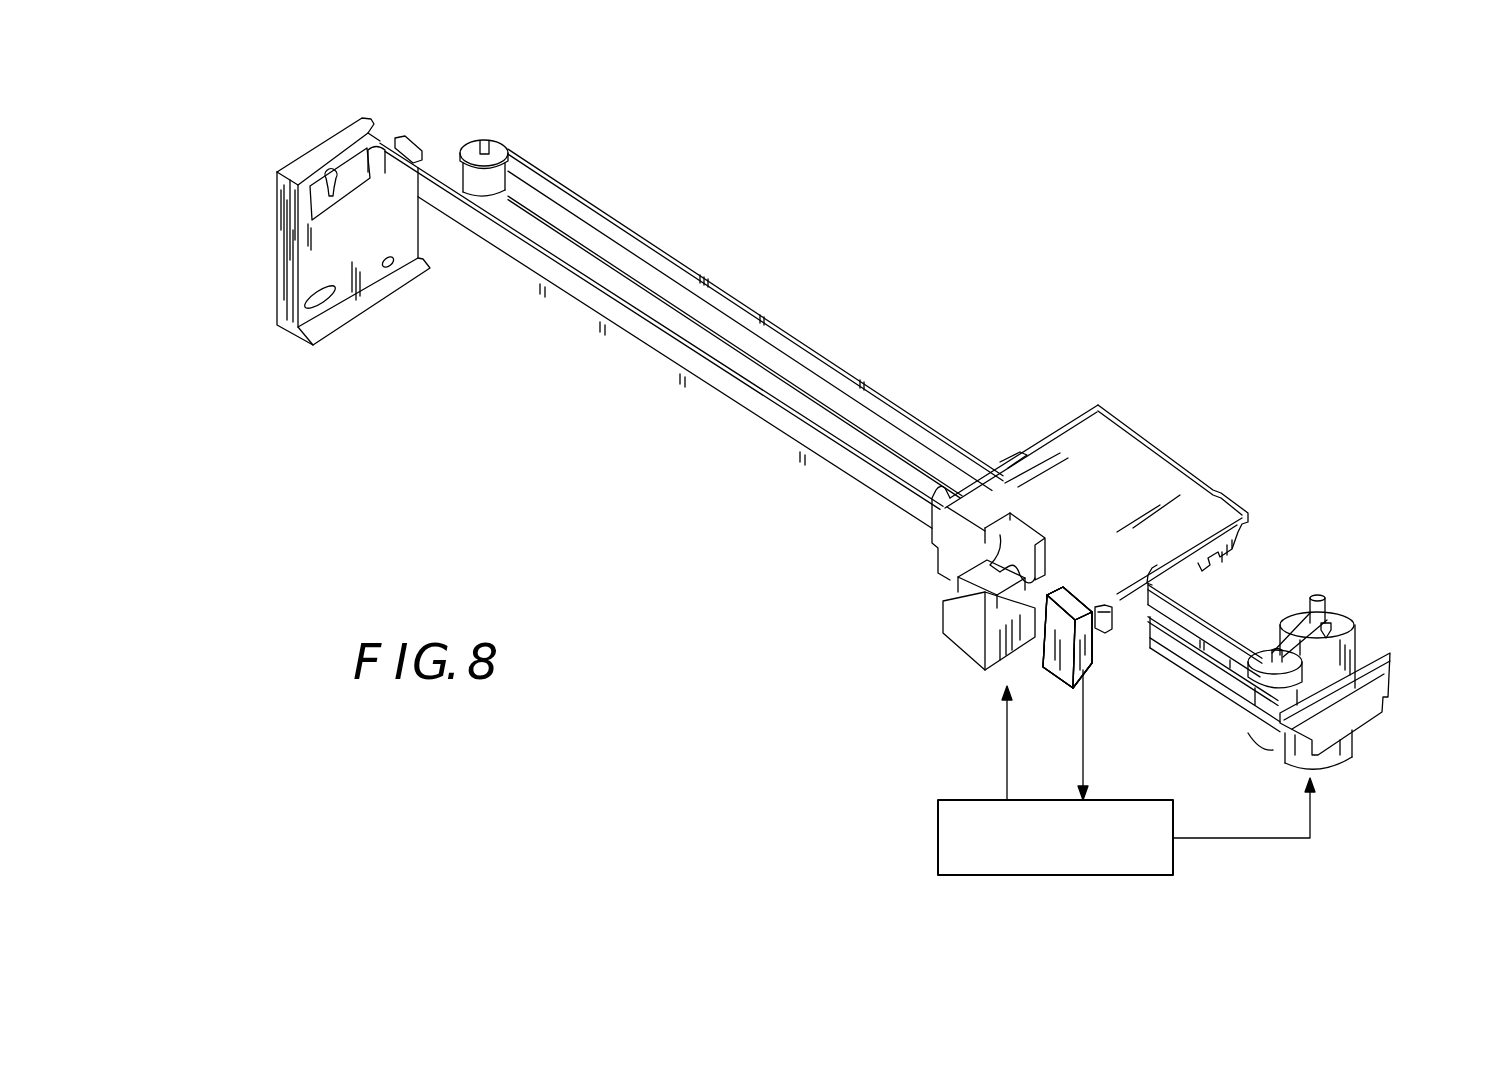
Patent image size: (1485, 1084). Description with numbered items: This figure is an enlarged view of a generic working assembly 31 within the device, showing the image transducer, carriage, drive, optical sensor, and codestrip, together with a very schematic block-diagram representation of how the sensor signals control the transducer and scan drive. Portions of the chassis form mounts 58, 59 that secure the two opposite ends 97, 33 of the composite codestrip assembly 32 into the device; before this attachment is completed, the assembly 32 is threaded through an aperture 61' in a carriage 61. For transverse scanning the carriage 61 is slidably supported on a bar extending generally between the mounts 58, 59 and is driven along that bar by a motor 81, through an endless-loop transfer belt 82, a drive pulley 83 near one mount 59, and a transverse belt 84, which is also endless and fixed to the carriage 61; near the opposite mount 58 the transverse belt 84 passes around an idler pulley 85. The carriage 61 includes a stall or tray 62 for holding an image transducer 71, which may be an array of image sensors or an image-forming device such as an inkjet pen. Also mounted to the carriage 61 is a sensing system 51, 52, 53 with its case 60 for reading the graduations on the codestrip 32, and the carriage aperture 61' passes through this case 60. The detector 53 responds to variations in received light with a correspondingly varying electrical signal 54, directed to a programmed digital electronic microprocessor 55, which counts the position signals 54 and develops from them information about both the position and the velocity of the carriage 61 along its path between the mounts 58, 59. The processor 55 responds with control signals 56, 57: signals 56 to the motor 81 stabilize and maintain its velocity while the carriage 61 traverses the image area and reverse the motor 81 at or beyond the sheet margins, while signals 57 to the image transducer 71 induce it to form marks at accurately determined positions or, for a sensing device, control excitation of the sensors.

The end of the composite codestrip assembly 97 is at (322, 110).
The shuttle assembly 31 is at (446, 150).
The idler pulley 85 is at (492, 148).
The mount 58 is at (343, 293).
The transverse belt 84 is at (820, 368).
The composite codestrip assembly 32 is at (717, 377).
The carriage 61 is at (1090, 452).
The sensing system 51 is at (1075, 622).
The sensing system 52 is at (1067, 637).
The detector 53 is at (1067, 637).
The case 60 is at (1067, 637).
The image transducer 71 is at (962, 613).
The tray 62 is at (962, 645).
The aperture 61' is at (1114, 670).
The control signals 57 is at (1005, 750).
The electrical signal 54 is at (1080, 752).
The microprocessor 55 is at (938, 838).
The control signals 56 is at (1312, 822).
The end of the composite codestrip assembly 33 is at (1292, 755).
The mount 59 is at (1365, 715).
The drive pulley 83 is at (1275, 680).
The motor 81 is at (1355, 655).
The transfer belt 82 is at (1290, 640).